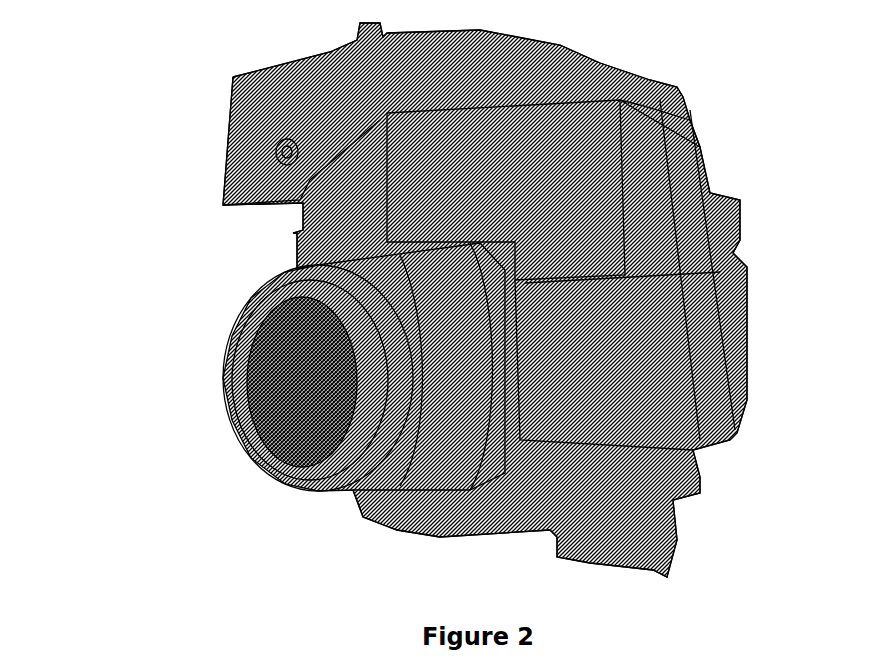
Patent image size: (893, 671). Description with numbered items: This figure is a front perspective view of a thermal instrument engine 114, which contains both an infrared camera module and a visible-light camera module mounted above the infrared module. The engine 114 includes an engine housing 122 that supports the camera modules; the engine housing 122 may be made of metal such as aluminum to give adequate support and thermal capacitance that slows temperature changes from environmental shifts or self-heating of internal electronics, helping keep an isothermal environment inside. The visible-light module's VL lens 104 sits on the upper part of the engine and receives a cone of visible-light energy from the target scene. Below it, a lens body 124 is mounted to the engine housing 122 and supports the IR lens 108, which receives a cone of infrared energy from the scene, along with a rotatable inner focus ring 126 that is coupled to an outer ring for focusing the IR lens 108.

The VL lens 104 is at (275, 145).
The IR lens 108 is at (300, 385).
The thermal instrument engine 114 is at (618, 348).
The engine housing 122 is at (530, 197).
The lens body 124 is at (456, 384).
The inner focus ring 126 is at (227, 368).